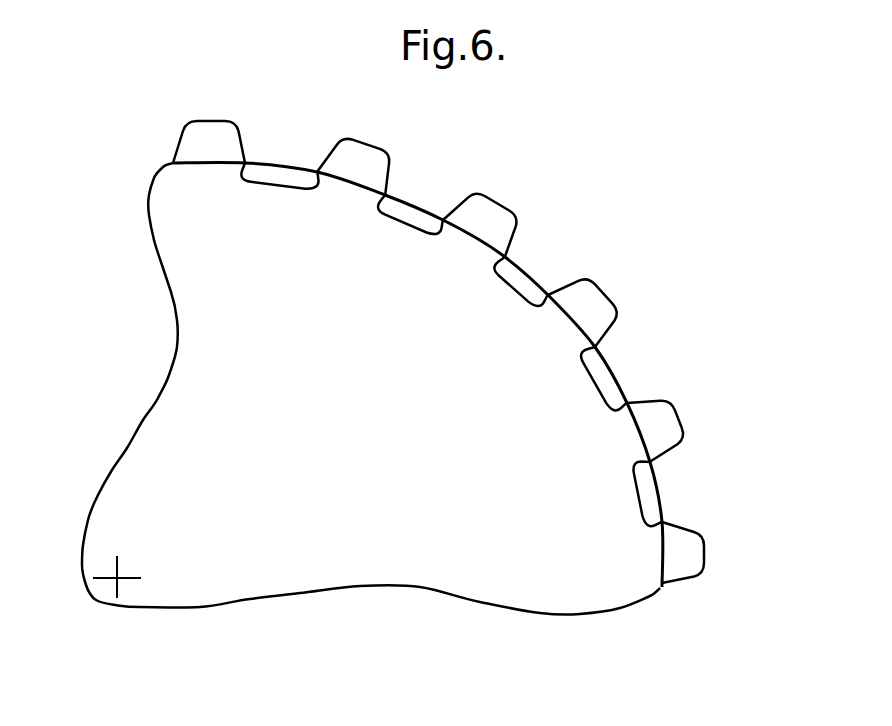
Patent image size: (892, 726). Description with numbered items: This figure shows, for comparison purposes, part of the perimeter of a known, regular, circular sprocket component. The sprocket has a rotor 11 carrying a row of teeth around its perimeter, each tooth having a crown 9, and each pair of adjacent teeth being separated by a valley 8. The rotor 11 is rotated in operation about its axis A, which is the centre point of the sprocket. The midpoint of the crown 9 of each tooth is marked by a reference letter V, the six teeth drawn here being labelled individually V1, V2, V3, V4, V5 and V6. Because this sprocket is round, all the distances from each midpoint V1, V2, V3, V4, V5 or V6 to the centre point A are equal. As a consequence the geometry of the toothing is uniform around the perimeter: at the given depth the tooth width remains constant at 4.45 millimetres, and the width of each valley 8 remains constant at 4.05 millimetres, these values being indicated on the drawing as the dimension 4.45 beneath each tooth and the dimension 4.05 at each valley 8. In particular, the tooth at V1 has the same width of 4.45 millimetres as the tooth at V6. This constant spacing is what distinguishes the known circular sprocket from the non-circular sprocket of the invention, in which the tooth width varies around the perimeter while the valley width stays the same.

The midpoint of tooth crown V1 is at (705, 554).
The midpoint of tooth crown V2 is at (682, 419).
The midpoint of tooth crown V3 is at (608, 294).
The midpoint of tooth crown V4 is at (493, 204).
The midpoint of tooth crown V5 is at (360, 143).
The midpoint of tooth crown V6 is at (209, 122).
The valley 8 is at (557, 273).
The crown 9 is at (471, 196).
The rotor 11 is at (350, 443).
The axis A is at (120, 572).
The valley width 4.05 is at (282, 166).
The tooth width 4.45 is at (209, 164).